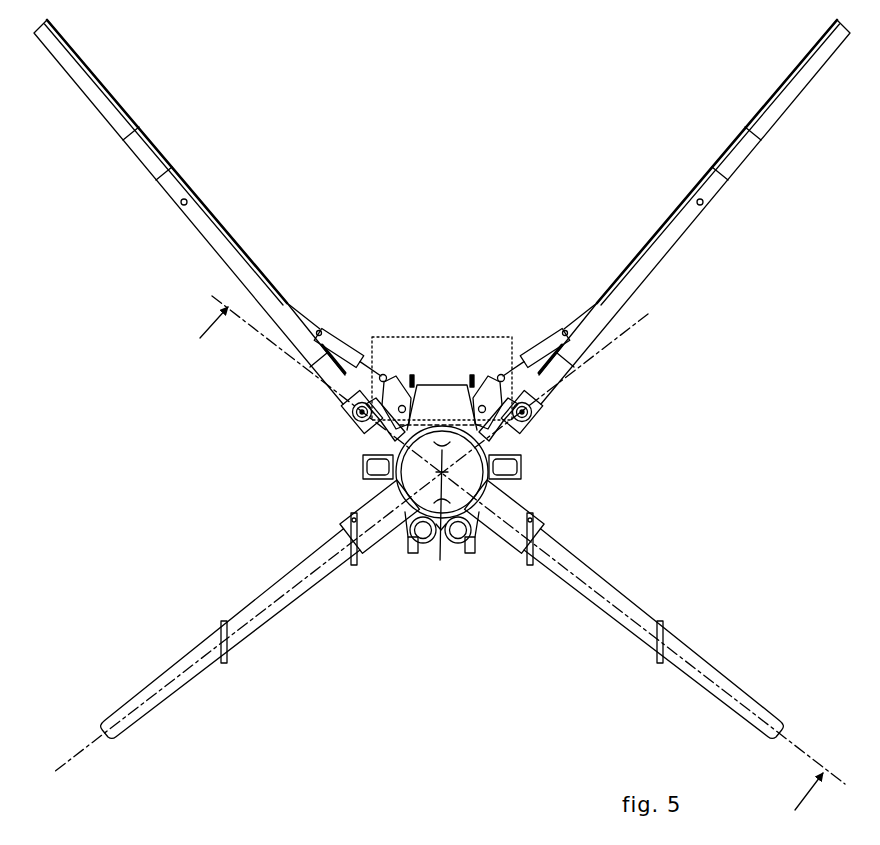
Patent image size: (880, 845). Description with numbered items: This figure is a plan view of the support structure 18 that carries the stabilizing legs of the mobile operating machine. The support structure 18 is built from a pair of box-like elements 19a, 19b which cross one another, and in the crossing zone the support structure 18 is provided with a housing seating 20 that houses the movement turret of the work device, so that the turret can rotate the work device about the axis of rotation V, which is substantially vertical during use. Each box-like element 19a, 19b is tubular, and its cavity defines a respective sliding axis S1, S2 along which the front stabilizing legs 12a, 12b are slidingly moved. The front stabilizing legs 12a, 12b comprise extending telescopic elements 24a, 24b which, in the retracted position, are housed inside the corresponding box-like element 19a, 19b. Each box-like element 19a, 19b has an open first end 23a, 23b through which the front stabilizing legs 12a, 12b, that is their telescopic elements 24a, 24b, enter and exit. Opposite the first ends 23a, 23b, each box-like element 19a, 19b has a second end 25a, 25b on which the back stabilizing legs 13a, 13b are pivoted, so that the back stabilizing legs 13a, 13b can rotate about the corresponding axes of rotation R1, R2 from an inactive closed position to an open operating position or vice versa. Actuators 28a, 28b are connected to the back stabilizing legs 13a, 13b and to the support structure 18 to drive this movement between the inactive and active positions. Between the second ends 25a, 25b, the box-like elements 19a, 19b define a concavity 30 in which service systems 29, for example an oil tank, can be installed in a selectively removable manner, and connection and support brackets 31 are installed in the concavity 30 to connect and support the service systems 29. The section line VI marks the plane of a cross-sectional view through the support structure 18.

The front stabilizing leg 12a is at (205, 685).
The front stabilizing leg 12b is at (679, 685).
The back stabilizing leg 13a is at (162, 137).
The back stabilizing leg 13b is at (720, 137).
The support structure 18 is at (550, 480).
The box-like element 19a is at (374, 560).
The box-like element 19b is at (510, 560).
The housing seating 20 is at (411, 476).
The first end 23a is at (351, 531).
The first end 23b is at (533, 531).
The extending telescopic element 24a is at (252, 610).
The extending telescopic element 24b is at (672, 643).
The second end 25a is at (500, 434).
The second end 25b is at (404, 395).
The actuator 28a is at (343, 348).
The actuator 28b is at (541, 348).
The service systems 29 is at (476, 337).
The concavity 30 is at (413, 378).
The connection and support brackets 31 is at (446, 386).
The axis of rotation R1 is at (358, 414).
The axis of rotation R2 is at (526, 414).
The sliding axis S1 is at (67, 762).
The sliding axis S2 is at (723, 692).
The axis of rotation V is at (440, 520).
The section line VI- VI is at (506, 564).